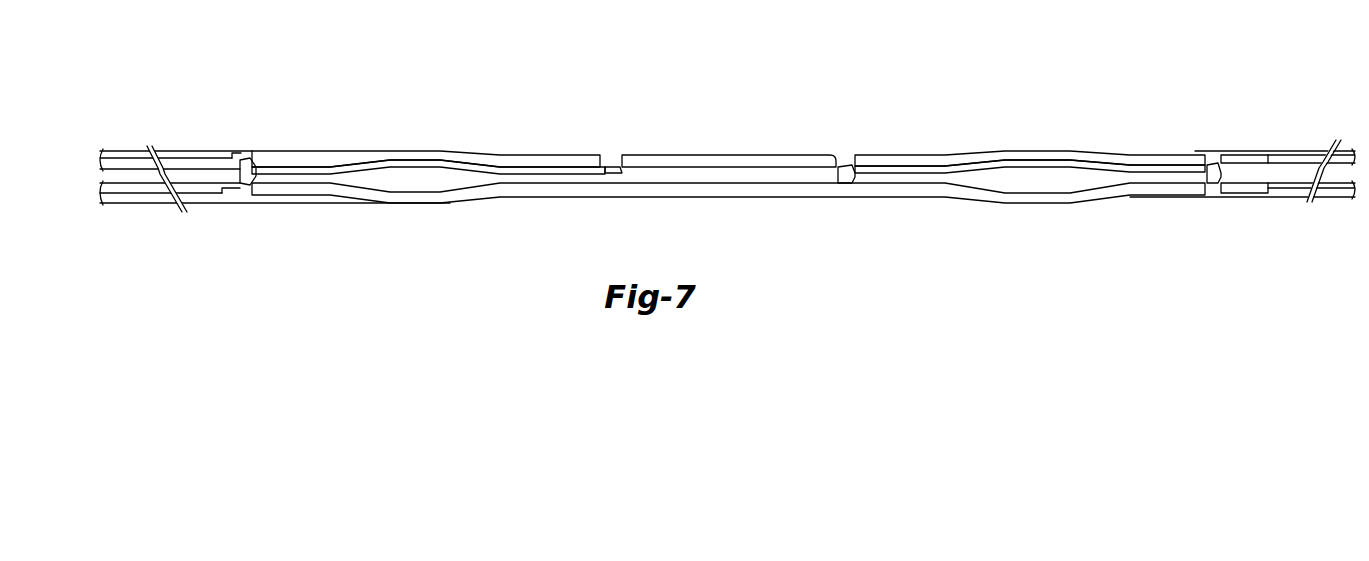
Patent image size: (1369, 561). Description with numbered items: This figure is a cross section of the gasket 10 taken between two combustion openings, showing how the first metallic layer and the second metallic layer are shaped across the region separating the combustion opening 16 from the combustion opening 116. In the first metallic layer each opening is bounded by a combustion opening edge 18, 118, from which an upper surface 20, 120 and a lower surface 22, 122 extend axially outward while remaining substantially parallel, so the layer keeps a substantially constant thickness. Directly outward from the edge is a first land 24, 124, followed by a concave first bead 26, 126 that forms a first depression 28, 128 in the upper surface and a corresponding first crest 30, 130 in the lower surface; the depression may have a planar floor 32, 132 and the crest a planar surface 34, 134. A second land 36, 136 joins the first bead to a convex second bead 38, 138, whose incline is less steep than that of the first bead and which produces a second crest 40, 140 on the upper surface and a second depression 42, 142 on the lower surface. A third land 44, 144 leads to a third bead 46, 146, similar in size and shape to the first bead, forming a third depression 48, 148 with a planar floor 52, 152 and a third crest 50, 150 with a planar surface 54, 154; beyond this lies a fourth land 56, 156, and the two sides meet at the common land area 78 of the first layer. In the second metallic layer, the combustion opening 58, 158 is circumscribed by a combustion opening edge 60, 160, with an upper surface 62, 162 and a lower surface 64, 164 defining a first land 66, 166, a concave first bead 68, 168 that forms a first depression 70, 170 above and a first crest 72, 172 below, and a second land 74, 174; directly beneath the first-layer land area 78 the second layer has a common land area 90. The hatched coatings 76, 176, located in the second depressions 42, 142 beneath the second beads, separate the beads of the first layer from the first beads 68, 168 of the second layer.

The gasket 10 is at (392, 97).
The combustion opening 16 is at (168, 158).
The combustion opening edge 18 is at (202, 161).
The upper surface 20 is at (287, 159).
The lower surface 22 is at (317, 168).
The first land 24 is at (228, 156).
The first bead 26 is at (249, 150).
The first depression 28 is at (257, 160).
The first crest 30 is at (241, 186).
The planar floor 32 is at (246, 164).
The planar surface 34 is at (251, 187).
The second land 36 is at (307, 152).
The second bead 38 is at (416, 150).
The second crest 40 is at (430, 157).
The second depression 42 is at (452, 160).
The third land 44 is at (549, 153).
The third bead 46 is at (612, 158).
The third depression 48 is at (625, 157).
The third crest 50 is at (607, 181).
The planar floor 52 is at (610, 164).
The planar surface 54 is at (619, 183).
The fourth land 56 is at (663, 154).
The combustion opening 58 is at (190, 197).
The combustion opening edge 60 is at (222, 194).
The upper surface 62 is at (300, 188).
The lower surface 64 is at (338, 194).
The first land 66 is at (276, 194).
The first bead 68 is at (428, 204).
The first depression 70 is at (447, 200).
The first crest 72 is at (470, 197).
The second land 74 is at (540, 198).
The coating 76 is at (410, 172).
The common land area 78 is at (742, 154).
The common land area 90 is at (742, 199).
The combustion opening 116 is at (1310, 148).
The combustion opening edge 118 is at (1288, 162).
The upper surface 120 is at (893, 154).
The lower surface 122 is at (930, 169).
The first land 124 is at (1266, 158).
The first bead 126 is at (1213, 149).
The first depression 128 is at (1228, 157).
The first crest 130 is at (1207, 186).
The planar floor 132 is at (1208, 158).
The planar surface 134 is at (1218, 191).
The second land 136 is at (1135, 152).
The second bead 138 is at (1022, 149).
The crest 140 is at (1040, 156).
The depression 142 is at (1063, 159).
The third land 144 is at (913, 156).
The third bead 146 is at (850, 154).
The third depression 148 is at (860, 165).
The third crest 150 is at (840, 181).
The planar floor 152 is at (845, 160).
The planar surface 154 is at (850, 186).
The fourth land 156 is at (836, 165).
The combustion opening 158 is at (1300, 187).
The combustion opening edge 160 is at (1280, 191).
The upper surface 162 is at (1060, 200).
The lower surface 164 is at (1090, 199).
The land 166 is at (1175, 197).
The bead 168 is at (1030, 204).
The depression 170 is at (890, 198).
The crest 172 is at (978, 201).
The land 174 is at (935, 198).
The coating 176 is at (1018, 170).